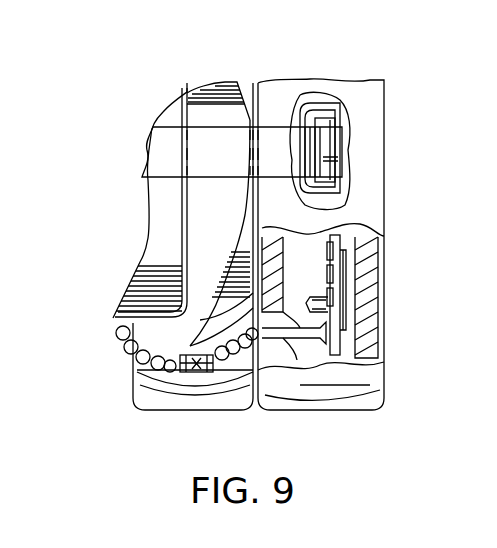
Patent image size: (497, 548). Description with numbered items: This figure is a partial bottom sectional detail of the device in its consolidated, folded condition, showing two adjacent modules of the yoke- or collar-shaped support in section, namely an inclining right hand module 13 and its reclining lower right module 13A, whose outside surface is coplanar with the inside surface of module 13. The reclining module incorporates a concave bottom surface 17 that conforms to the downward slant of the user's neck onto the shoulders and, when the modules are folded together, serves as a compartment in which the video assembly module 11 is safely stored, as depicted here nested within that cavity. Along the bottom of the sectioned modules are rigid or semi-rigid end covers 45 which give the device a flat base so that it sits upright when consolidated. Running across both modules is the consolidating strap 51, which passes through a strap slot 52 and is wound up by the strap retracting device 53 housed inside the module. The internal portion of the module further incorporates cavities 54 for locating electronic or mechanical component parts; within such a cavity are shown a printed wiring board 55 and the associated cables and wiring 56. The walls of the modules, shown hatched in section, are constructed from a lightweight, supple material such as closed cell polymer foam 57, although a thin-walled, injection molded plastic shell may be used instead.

The video assembly module 11 is at (135, 268).
The right hand module 13 is at (389, 185).
The reclining lower right module 13A is at (211, 83).
The concave bottom surface 17 is at (206, 239).
The end cover 45 is at (145, 415).
The consolidating strap 51 is at (150, 136).
The strap slot 52 is at (323, 150).
The strap retracting device 53 is at (330, 116).
The cavity 54 is at (320, 304).
The printed wiring board 55 is at (343, 232).
The cables and wiring 56 is at (311, 349).
The closed cell polymer foam 57 is at (389, 298).